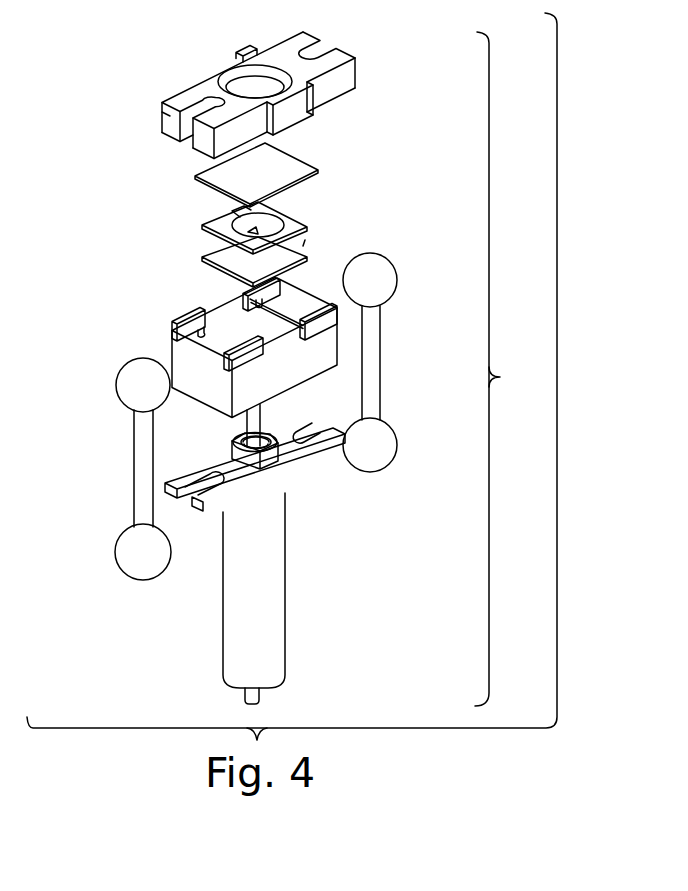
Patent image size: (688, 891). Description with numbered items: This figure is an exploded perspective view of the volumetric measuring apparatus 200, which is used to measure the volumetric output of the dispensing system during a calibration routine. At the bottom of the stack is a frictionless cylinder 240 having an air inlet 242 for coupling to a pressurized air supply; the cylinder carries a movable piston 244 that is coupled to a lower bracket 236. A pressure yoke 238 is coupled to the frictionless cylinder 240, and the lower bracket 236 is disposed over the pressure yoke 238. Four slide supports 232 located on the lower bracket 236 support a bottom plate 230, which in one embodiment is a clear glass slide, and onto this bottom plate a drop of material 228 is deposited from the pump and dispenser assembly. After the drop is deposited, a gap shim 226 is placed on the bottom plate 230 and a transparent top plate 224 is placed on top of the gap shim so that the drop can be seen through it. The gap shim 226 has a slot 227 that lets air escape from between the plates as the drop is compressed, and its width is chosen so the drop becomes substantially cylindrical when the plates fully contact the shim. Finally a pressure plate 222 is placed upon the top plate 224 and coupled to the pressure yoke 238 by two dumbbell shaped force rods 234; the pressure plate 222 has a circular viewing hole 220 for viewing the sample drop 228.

The volumetric measuring apparatus 200 is at (508, 369).
The circular viewing hole 220 is at (248, 81).
The pressure plate 222 is at (168, 125).
The top plate 224 is at (208, 175).
The gap shim 226 is at (211, 220).
The slot 227 is at (236, 211).
The drop of material 228 is at (300, 246).
The bottom plate 230 is at (222, 252).
The slide supports 232 is at (245, 297).
The dumbbell shaped force rods 234 is at (127, 380).
The lower bracket 236 is at (170, 328).
The pressure yoke 238 is at (196, 512).
The frictionless cylinder 240 is at (268, 583).
The air inlet 242 is at (258, 702).
The movable piston 244 is at (253, 408).